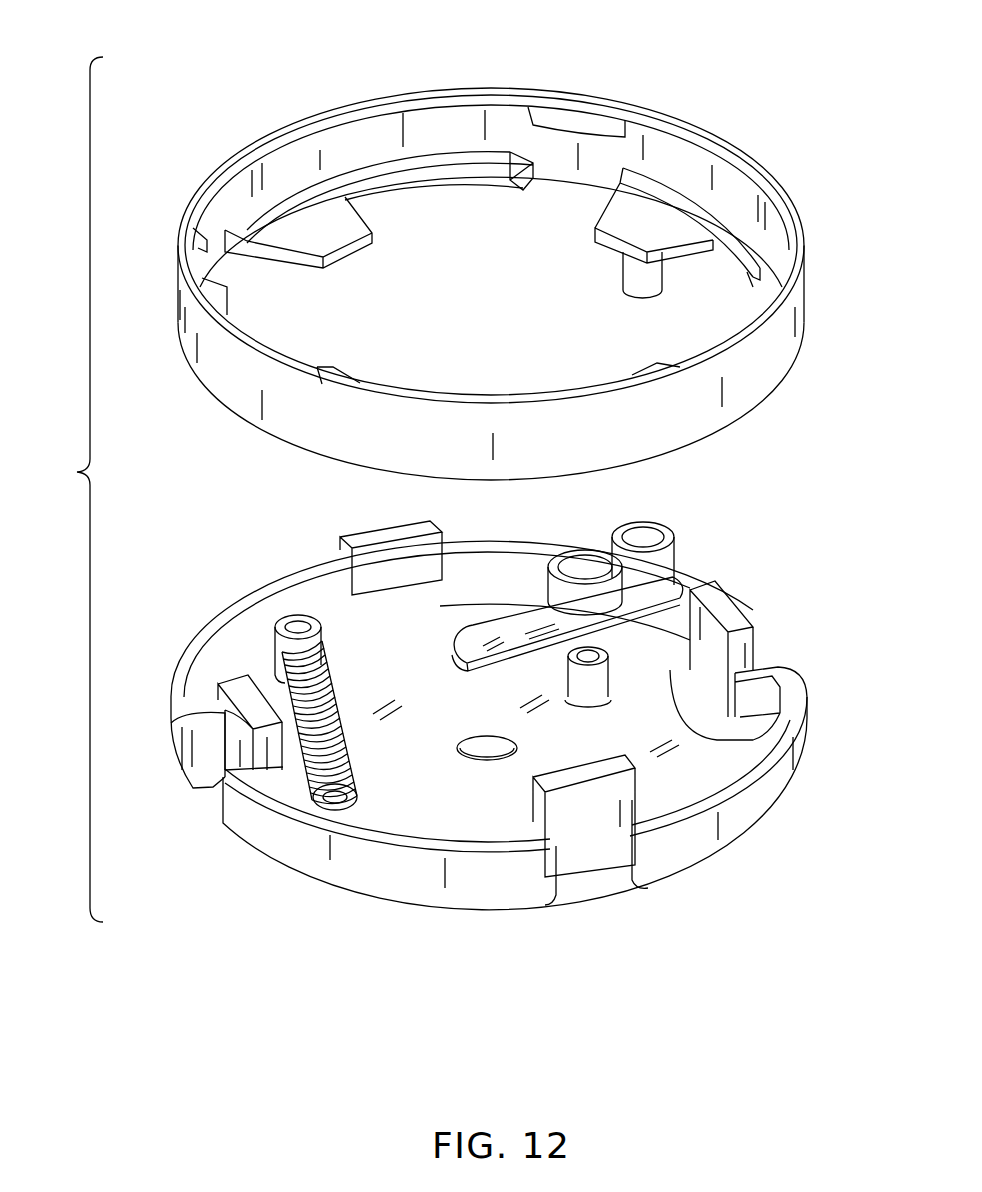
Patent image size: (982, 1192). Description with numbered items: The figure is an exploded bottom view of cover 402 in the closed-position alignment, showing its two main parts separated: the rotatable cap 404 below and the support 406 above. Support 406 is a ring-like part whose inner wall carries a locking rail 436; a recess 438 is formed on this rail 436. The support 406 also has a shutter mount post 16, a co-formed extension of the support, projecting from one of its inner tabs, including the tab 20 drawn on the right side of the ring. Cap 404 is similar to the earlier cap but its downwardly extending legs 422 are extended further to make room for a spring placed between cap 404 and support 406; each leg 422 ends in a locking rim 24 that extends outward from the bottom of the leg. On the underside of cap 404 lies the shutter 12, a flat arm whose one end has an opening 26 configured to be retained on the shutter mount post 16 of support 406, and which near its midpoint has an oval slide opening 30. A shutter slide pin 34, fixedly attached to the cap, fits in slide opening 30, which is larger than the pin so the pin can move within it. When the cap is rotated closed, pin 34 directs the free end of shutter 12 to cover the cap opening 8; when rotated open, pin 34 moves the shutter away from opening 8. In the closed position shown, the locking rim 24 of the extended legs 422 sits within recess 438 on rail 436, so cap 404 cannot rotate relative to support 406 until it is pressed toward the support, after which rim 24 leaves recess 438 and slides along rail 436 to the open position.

The cover 402 is at (64, 489).
The support 406 is at (766, 368).
The recess 438 is at (377, 182).
The locking rail 436 is at (262, 208).
The tab 20 is at (657, 230).
The shutter mount post 16 is at (645, 283).
The rotatable cap 404 is at (745, 812).
The legs 422 is at (242, 745).
The locking rim 24 is at (232, 688).
The shutter 12 is at (470, 636).
The opening 26 is at (657, 558).
The slide opening 30 is at (577, 598).
The shutter slide pin 34 is at (590, 694).
The cap opening 8 is at (487, 755).